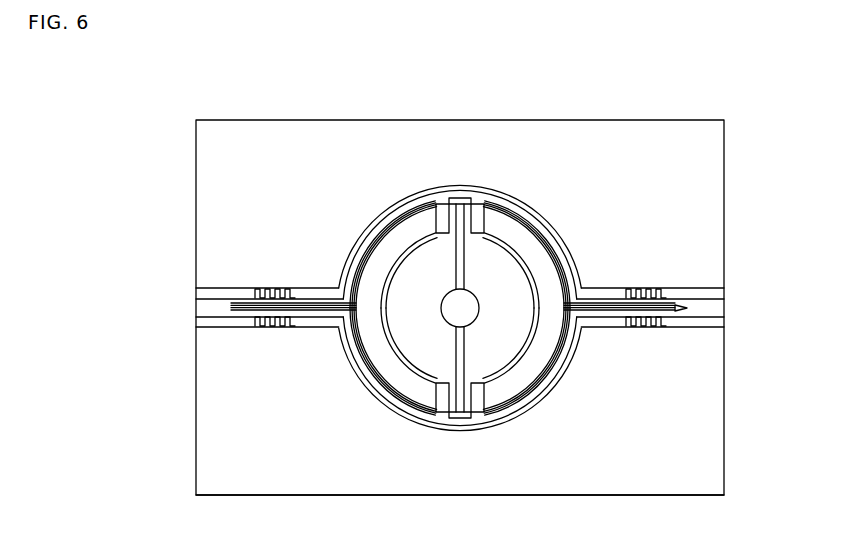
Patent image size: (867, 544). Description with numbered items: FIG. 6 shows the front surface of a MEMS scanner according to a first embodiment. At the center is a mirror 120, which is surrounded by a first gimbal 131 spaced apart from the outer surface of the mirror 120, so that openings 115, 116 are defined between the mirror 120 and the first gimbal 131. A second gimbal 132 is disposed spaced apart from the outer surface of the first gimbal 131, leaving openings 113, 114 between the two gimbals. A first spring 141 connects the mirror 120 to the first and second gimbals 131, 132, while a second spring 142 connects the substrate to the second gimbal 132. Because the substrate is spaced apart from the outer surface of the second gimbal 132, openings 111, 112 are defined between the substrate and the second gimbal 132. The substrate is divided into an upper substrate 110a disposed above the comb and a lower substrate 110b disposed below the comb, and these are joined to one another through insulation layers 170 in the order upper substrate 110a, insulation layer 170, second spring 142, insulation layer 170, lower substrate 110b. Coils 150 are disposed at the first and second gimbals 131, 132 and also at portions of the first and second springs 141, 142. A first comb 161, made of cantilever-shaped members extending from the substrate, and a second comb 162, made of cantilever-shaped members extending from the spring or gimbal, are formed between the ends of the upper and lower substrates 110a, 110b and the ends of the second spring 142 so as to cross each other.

The upper substrate 110a is at (623, 160).
The lower substrate 110b is at (693, 458).
The opening 111 is at (410, 205).
The opening 112 is at (463, 426).
The opening 113 is at (394, 369).
The opening 114 is at (527, 378).
The opening 115 is at (421, 270).
The opening 116 is at (492, 275).
The mirror 120 is at (460, 312).
The first gimbal 131 is at (488, 380).
The second gimbal 132 is at (510, 397).
The first spring 141 is at (462, 241).
The second spring 142 is at (697, 305).
The coil 150 is at (679, 307).
The first comb 161 is at (258, 299).
The second comb 162 is at (255, 290).
The insulation layer 170 is at (202, 318).